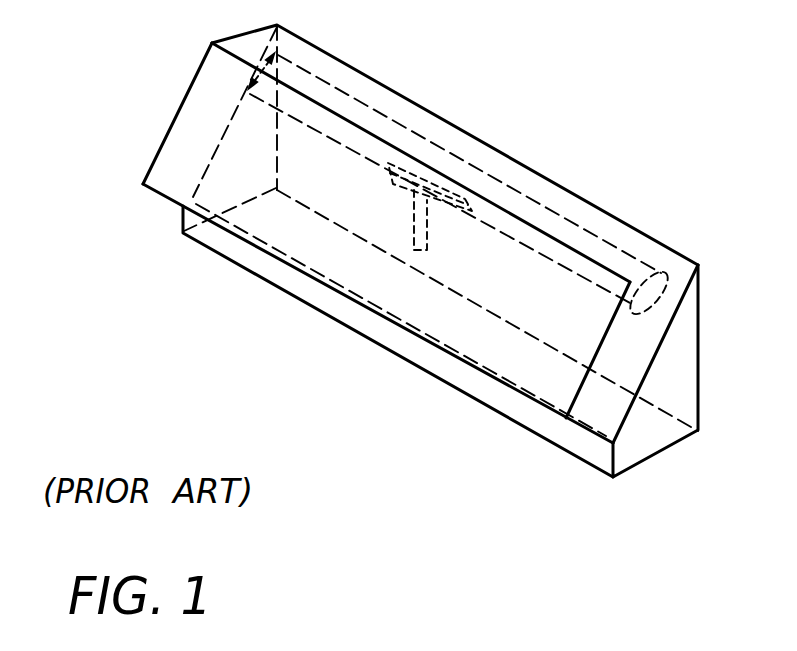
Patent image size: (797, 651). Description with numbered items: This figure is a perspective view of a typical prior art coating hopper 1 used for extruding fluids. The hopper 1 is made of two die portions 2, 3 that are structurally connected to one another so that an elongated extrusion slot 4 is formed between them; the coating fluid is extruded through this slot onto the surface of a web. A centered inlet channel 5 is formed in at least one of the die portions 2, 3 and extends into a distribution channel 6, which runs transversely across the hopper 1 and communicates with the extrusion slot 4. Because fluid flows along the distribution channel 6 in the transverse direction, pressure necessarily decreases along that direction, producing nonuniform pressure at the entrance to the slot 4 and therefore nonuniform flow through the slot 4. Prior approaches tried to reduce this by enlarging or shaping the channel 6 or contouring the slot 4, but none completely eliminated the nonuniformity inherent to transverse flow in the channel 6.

The hopper 1 is at (682, 74).
The die portion 2 is at (700, 325).
The die portion 3 is at (174, 118).
The extrusion slot 4 is at (626, 245).
The inlet channel 5 is at (428, 217).
The distribution channel 6 is at (542, 207).